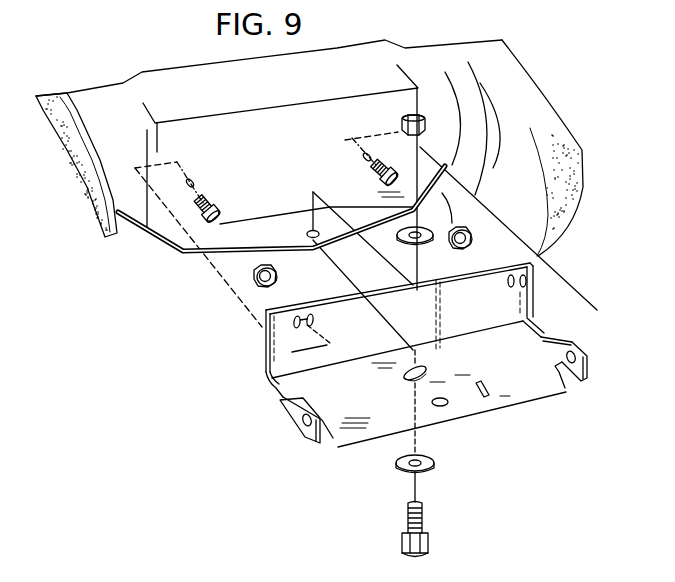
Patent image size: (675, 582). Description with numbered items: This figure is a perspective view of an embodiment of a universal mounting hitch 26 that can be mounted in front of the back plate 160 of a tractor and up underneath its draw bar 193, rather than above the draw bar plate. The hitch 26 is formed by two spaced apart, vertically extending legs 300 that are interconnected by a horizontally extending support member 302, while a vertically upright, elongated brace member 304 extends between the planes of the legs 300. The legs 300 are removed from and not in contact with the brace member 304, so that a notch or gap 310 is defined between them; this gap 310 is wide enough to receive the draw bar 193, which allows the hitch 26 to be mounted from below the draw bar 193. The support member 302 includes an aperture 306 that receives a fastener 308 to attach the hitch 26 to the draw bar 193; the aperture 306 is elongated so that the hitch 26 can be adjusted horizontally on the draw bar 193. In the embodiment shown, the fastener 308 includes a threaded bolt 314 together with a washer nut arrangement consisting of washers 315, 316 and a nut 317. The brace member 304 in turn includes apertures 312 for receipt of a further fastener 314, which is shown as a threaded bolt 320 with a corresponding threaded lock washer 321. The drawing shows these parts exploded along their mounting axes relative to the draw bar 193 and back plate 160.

The universal mounting hitch 26 is at (145, 408).
The back plate 160 is at (192, 136).
The draw bar 193 is at (252, 238).
The vertically extending legs 300 is at (298, 415).
The support member 302 is at (519, 380).
The brace member 304 is at (285, 357).
The aperture 306 is at (417, 379).
The fastener 308 is at (432, 561).
The notch/gap 310 is at (283, 396).
The apertures 312 is at (294, 322).
The threaded bolt 314 is at (236, 206).
The washer 315 is at (428, 464).
The washer 316 is at (404, 250).
The nut 317 is at (404, 124).
The threaded bolt 320 is at (228, 184).
The threaded lock washer 321 is at (275, 286).